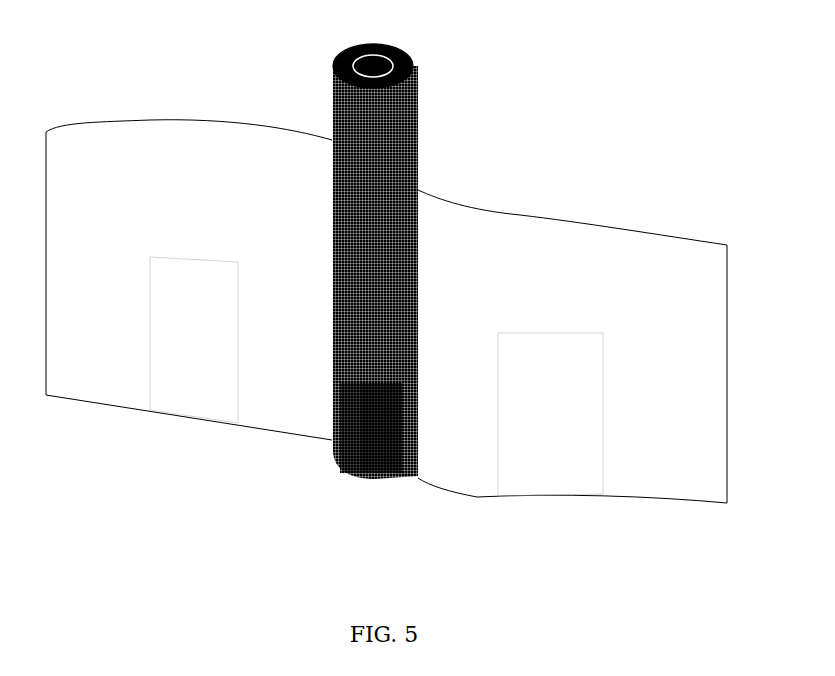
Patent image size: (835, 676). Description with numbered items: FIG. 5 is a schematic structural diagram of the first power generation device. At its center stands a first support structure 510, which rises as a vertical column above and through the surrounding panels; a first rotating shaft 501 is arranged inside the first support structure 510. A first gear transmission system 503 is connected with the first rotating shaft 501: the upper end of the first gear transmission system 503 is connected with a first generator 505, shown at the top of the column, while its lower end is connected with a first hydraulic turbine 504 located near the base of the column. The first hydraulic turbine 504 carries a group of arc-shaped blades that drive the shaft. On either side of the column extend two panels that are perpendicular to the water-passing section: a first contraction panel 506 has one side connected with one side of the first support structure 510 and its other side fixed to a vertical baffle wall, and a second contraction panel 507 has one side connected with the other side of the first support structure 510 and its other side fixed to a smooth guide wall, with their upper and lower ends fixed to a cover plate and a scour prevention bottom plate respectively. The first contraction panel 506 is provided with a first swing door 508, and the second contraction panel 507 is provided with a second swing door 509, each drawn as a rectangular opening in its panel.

The first rotating shaft 501 is at (372, 455).
The first gear transmission system 503 is at (403, 80).
The first hydraulic turbine 504 is at (350, 418).
The first generator 505 is at (372, 60).
The first contraction panel 506 is at (102, 380).
The second contraction panel 507 is at (668, 465).
The first swing door 508 is at (195, 390).
The second swing door 509 is at (572, 457).
The first support structure 510 is at (378, 205).